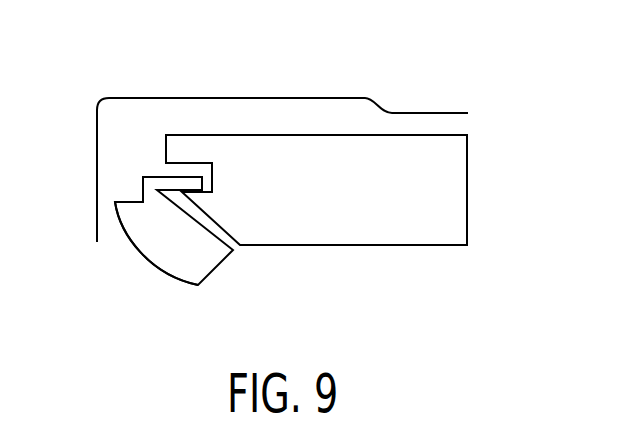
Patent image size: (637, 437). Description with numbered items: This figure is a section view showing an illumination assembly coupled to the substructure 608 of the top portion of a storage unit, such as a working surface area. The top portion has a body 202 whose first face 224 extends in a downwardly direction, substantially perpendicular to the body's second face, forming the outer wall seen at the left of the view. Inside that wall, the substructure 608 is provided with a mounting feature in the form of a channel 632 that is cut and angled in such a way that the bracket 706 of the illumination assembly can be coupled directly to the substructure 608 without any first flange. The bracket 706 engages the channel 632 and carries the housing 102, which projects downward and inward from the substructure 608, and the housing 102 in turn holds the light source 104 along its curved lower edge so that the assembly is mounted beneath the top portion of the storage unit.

The body 202 is at (242, 99).
The first face 224 is at (97, 157).
The substructure 608 is at (468, 177).
The channel 632 is at (190, 162).
The housing 102 is at (217, 272).
The bracket 706 is at (153, 173).
The light source 104 is at (150, 257).